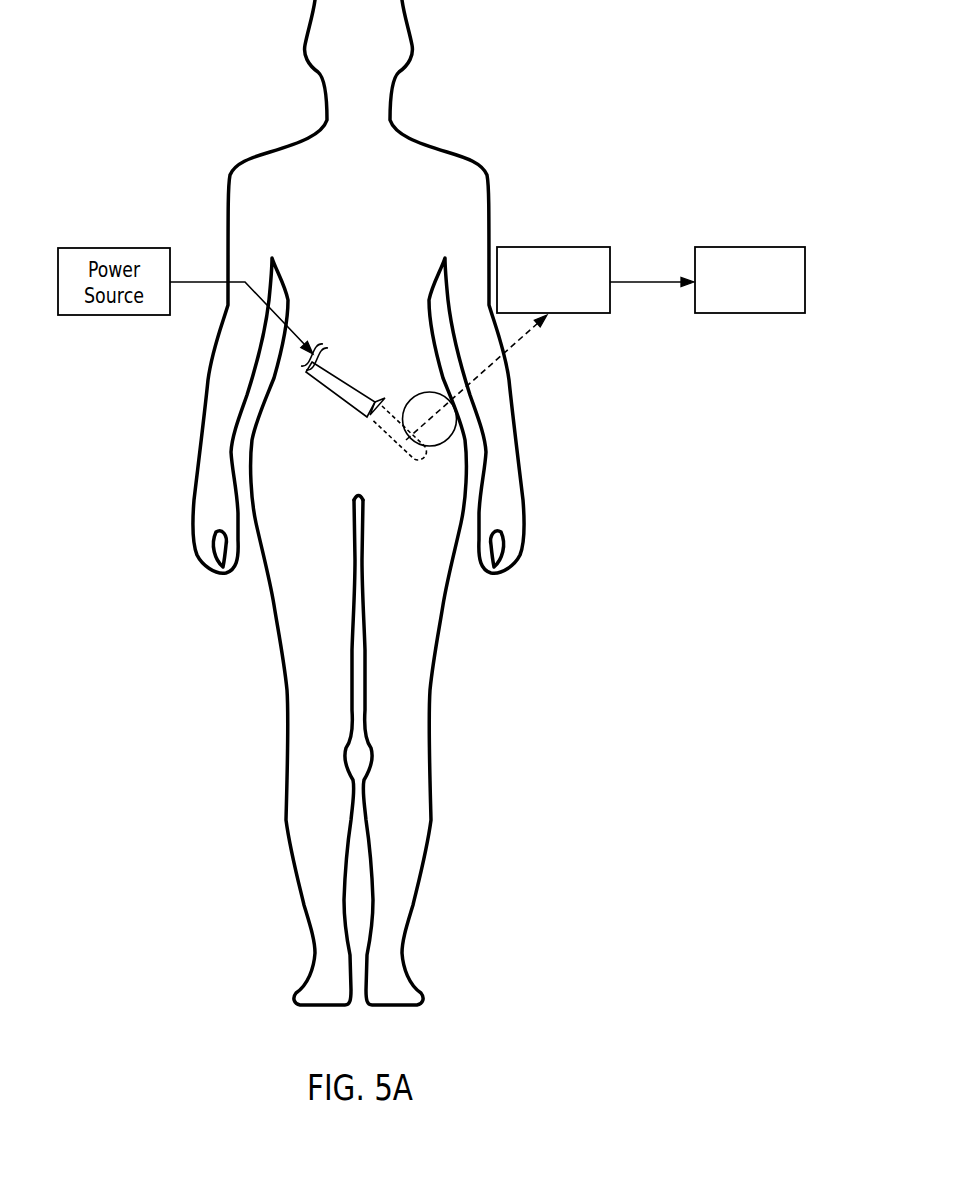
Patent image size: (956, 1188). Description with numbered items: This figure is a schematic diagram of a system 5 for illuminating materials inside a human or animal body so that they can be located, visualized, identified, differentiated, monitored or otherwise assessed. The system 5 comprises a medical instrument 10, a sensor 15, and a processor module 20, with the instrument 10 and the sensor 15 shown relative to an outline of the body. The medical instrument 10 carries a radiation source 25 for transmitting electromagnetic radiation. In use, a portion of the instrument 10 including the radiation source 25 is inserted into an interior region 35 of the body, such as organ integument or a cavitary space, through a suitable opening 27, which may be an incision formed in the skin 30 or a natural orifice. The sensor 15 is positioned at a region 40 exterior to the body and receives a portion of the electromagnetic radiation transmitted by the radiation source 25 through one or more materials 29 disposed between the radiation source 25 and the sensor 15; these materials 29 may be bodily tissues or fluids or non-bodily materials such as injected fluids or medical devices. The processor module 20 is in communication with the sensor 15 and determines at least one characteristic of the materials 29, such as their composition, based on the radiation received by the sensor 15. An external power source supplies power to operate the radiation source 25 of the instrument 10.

The system 5 is at (647, 183).
The medical instrument 10 is at (363, 390).
The sensor 15 is at (547, 247).
The processor module 20 is at (747, 247).
The radiation source 25 is at (398, 451).
The opening 27 is at (362, 428).
The materials 29 is at (428, 393).
The skin 30 is at (359, 425).
The interior region 35 is at (428, 508).
The region exterior to the body 40 is at (547, 378).